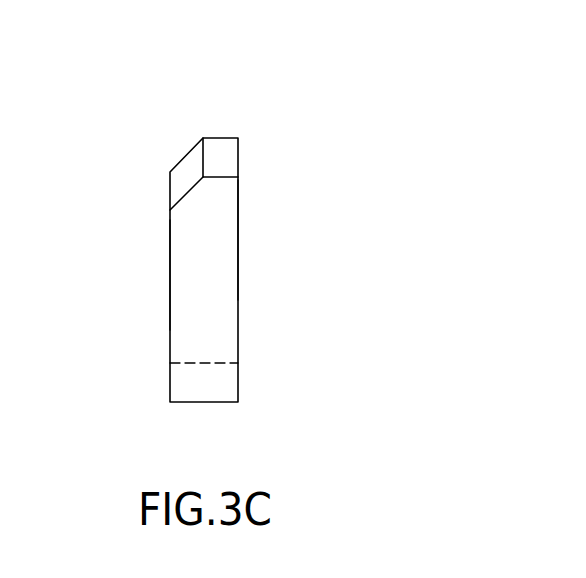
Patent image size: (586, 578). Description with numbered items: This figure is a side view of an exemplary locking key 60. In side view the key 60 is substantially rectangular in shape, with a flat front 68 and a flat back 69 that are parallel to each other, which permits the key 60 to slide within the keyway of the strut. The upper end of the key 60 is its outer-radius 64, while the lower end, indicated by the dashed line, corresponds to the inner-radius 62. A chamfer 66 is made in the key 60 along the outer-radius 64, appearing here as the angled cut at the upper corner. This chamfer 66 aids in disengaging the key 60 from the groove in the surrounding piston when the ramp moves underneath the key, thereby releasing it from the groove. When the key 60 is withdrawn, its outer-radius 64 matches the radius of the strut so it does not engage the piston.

The locking key 60 is at (193, 253).
The inner-radius 62 is at (248, 383).
The outer-radius 64 is at (230, 130).
The chamfer 66 is at (185, 167).
The flat front 68 is at (170, 317).
The flat back 69 is at (238, 227).